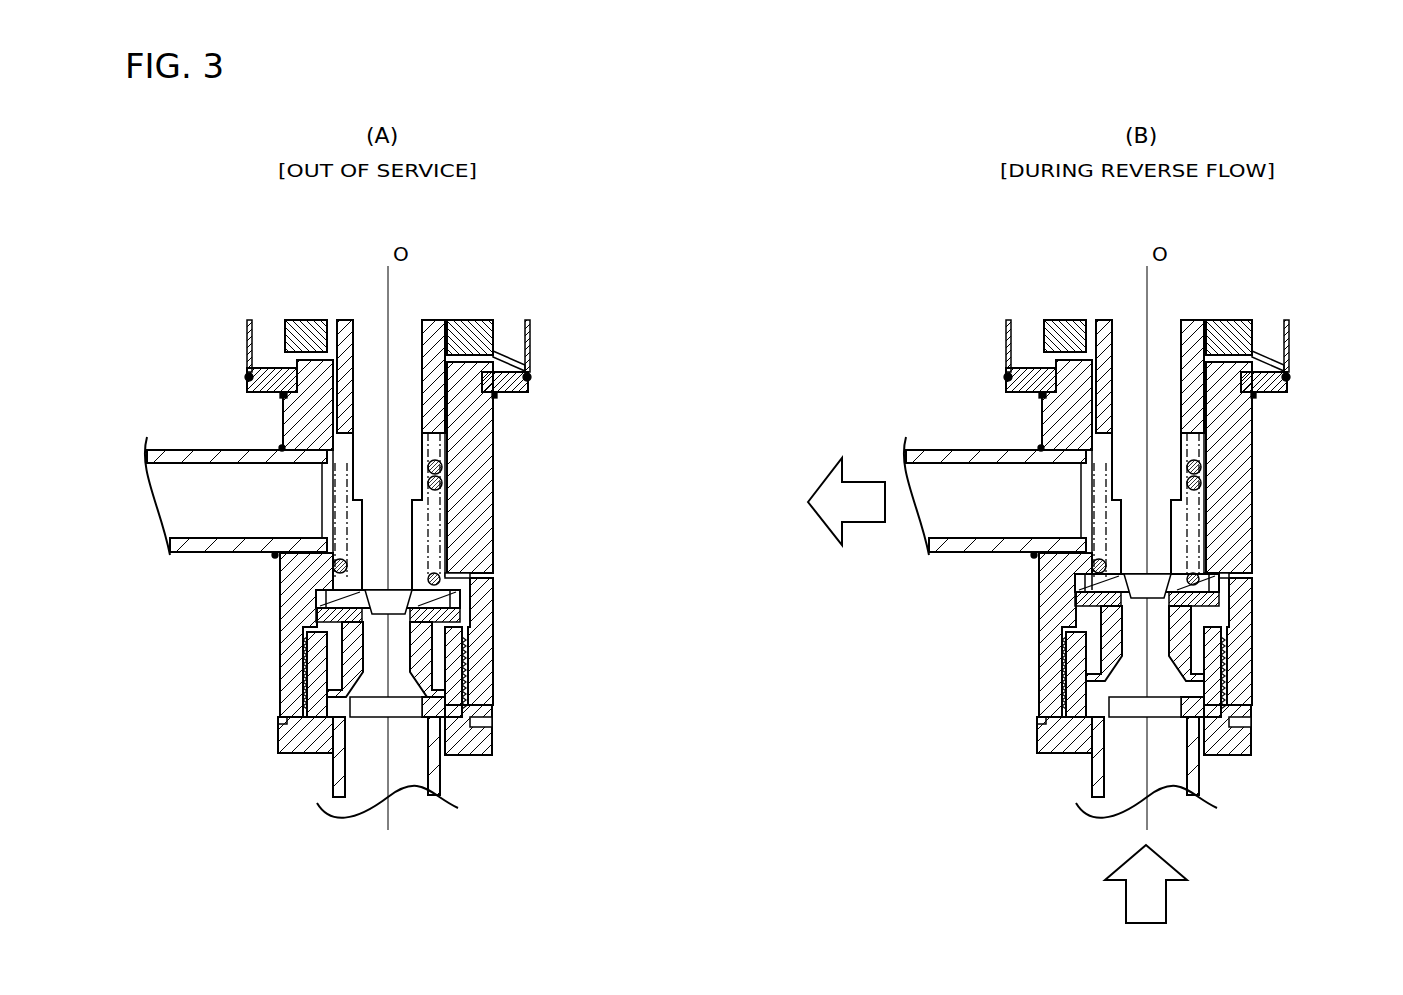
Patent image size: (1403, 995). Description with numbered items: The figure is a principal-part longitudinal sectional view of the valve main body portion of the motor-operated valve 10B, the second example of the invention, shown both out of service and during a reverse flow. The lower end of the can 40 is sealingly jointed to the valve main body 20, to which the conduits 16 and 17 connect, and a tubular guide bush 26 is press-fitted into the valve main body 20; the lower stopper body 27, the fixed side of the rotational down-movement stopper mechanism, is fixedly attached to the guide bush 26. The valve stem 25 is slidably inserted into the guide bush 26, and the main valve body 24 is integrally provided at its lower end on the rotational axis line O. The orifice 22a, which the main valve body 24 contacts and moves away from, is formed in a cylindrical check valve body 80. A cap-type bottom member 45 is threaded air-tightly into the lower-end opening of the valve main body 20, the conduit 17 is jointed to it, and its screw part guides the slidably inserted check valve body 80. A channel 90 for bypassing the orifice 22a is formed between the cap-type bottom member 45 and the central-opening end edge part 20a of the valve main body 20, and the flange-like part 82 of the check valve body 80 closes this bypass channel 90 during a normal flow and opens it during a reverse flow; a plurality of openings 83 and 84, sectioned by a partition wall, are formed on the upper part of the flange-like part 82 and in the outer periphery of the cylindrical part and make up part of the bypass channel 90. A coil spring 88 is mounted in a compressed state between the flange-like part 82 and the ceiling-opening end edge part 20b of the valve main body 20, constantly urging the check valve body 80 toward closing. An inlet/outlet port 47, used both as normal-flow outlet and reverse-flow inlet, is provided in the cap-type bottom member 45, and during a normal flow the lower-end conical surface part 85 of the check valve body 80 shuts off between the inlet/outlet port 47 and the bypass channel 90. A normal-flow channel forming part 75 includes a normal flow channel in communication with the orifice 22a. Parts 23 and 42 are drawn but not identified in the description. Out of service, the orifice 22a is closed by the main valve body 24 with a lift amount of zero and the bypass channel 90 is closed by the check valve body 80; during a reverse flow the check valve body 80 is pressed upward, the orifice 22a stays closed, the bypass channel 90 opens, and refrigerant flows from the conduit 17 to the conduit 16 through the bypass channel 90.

The motor-operated valve 10B is at (215, 296).
The can 40 is at (531, 348).
The lower stopper body 27 is at (530, 379).
The flange 23 is at (507, 387).
The tubular guide bush 26 is at (447, 413).
The branch housing 42 is at (287, 404).
The ceiling-opening end edge part 20b is at (412, 470).
The valve stem 25 is at (443, 476).
The valve main body 20 is at (496, 682).
The central-opening end edge part 20a is at (450, 565).
The opening 83 is at (473, 579).
The bypass channel 90 is at (468, 603).
The flange-like part 82 is at (310, 617).
The check valve body 80 is at (447, 632).
The opening 84 is at (437, 657).
The orifice 22a is at (308, 638).
The main valve body 24 is at (316, 603).
The coil spring 88 is at (333, 583).
The lower-end conical surface part 85 is at (283, 717).
The cap-type bottom member 45 is at (280, 757).
The normal-flow channel forming part 75 is at (463, 718).
The inlet/outlet port 47 is at (397, 710).
The conduit 17 is at (333, 801).
The conduit 16 is at (177, 556).